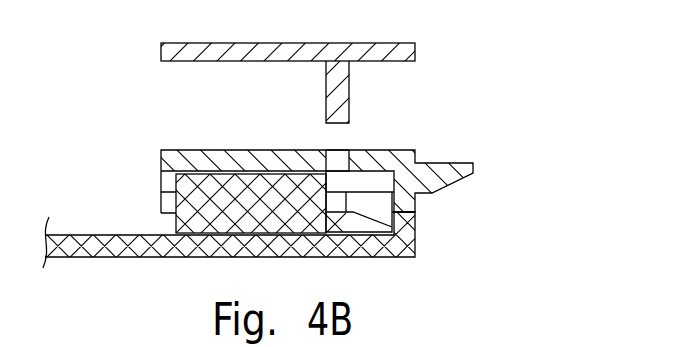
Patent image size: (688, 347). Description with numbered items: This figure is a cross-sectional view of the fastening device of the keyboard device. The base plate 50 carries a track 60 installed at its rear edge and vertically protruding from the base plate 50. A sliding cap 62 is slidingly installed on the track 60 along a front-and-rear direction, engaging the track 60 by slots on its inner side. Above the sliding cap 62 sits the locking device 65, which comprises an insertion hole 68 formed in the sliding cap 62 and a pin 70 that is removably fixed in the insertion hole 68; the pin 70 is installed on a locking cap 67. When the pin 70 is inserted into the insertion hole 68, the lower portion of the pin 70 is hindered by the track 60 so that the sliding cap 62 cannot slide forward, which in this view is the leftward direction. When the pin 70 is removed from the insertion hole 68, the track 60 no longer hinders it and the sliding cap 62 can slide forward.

The base plate 50 is at (80, 240).
The track 60 is at (195, 203).
The sliding cap 62 is at (222, 160).
The locking device 65 is at (449, 52).
The locking cap 67 is at (172, 53).
The insertion hole 68 is at (335, 163).
The pin 70 is at (342, 90).